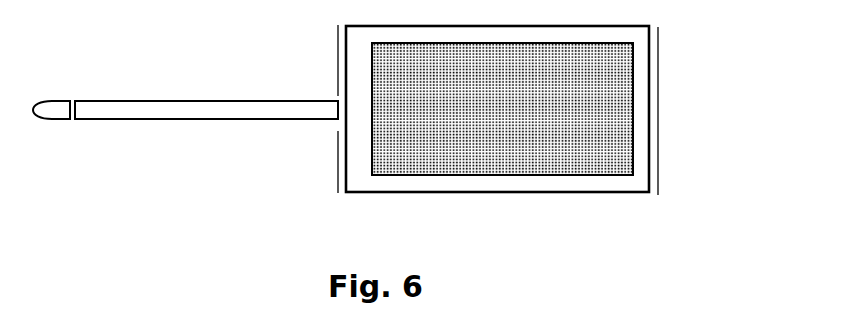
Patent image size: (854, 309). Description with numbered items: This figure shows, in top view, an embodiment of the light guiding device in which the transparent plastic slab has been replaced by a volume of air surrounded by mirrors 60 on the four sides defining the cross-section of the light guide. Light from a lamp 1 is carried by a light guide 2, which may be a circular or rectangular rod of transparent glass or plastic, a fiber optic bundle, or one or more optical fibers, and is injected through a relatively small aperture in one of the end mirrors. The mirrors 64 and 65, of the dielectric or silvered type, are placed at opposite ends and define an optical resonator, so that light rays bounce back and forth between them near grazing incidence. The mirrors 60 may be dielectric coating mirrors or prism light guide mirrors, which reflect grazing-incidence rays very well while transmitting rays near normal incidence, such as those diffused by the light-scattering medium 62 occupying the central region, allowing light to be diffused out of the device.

The lamp 1 is at (58, 98).
The light guide 2 is at (183, 120).
The prism light guide mirrors 60 is at (405, 193).
The light-scattering medium 62 is at (535, 175).
The mirror 64 is at (660, 37).
The mirror 65 is at (338, 33).